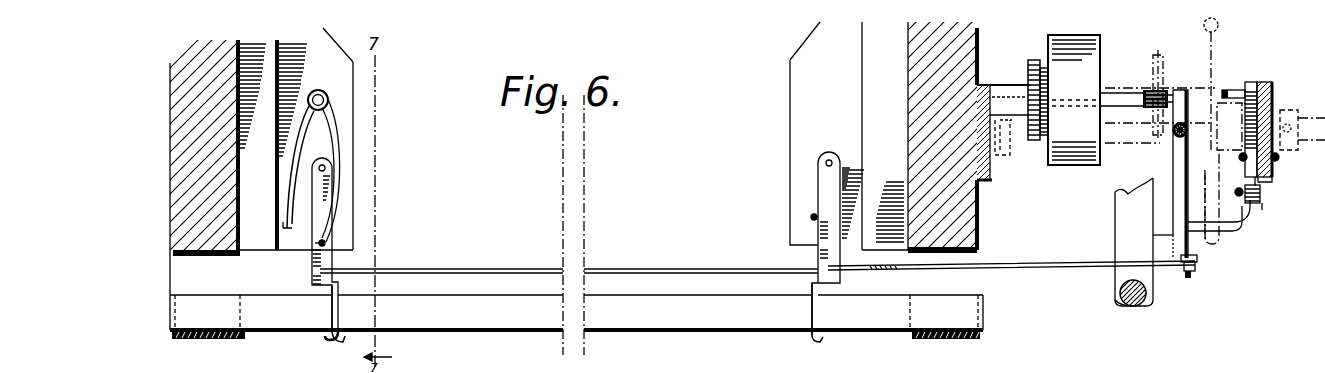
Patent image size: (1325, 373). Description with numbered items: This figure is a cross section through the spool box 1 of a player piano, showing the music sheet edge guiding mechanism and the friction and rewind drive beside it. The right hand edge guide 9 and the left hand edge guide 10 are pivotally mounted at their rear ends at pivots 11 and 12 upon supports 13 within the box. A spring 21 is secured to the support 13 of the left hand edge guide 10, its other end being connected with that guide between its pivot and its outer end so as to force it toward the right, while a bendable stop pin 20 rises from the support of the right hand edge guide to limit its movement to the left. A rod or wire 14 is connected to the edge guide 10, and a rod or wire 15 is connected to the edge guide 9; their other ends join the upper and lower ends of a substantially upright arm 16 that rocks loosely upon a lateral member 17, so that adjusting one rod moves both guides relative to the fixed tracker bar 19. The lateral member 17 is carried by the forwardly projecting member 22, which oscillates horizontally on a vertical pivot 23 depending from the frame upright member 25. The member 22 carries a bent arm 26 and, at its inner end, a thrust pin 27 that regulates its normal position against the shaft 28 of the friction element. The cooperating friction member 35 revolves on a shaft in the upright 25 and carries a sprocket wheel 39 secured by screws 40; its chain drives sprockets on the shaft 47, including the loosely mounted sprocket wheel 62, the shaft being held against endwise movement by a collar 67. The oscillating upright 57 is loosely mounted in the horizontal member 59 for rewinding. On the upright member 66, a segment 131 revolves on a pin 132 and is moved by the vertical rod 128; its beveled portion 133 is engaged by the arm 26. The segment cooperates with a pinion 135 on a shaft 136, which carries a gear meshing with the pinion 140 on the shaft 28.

The spool box 1 is at (193, 254).
The edge guide 9 is at (812, 340).
The edge guide 10 is at (330, 343).
The pivot 11 is at (824, 163).
The pivot 12 is at (327, 168).
The support 13 is at (329, 100).
The rod or wire 14 is at (688, 266).
The rod or wire 15 is at (1042, 261).
The upright arm 16 is at (1197, 264).
The lateral member 17 is at (1187, 280).
The tracker bar 19 is at (709, 333).
The stop pin 20 is at (811, 217).
The spring 21 is at (292, 136).
The forwardly-projecting member 22 is at (1153, 178).
The vertical pivot 23 is at (1174, 140).
The upright member 25 is at (1011, 171).
The bent arm 26 is at (1237, 232).
The thrust pin 27 is at (1193, 98).
The shaft 28 is at (1119, 97).
The cooperating member of the friction element 35 is at (1074, 100).
The sprocket wheel 39 is at (1033, 59).
The screws 40 is at (1028, 78).
The shaft 47 is at (1306, 157).
The upright 57 is at (1144, 304).
The horizontal member 59 is at (1114, 300).
The sprocket wheel 62 is at (1226, 35).
The upright member 66 is at (1272, 176).
The collar 67 is at (1283, 112).
The vertical rod 128 is at (1261, 197).
The segment 131 is at (1263, 208).
The pin 132 is at (1254, 178).
The beveled portion 133 is at (1244, 196).
The pinion 135 is at (1262, 82).
The shaft 136 is at (1272, 92).
The pinion 140 is at (1162, 90).